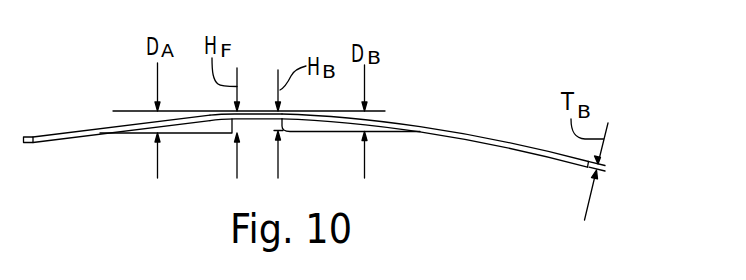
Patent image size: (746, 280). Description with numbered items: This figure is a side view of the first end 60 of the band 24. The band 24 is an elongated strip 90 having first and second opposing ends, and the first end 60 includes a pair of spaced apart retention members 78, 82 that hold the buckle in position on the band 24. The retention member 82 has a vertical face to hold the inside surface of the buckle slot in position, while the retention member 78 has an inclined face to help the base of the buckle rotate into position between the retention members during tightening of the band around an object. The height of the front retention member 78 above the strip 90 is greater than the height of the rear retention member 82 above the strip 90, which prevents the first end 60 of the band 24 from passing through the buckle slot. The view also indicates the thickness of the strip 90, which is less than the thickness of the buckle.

The band 24 is at (415, 90).
The first end 60 is at (32, 136).
The rear retention member 82 is at (222, 134).
The front retention member 78 is at (294, 133).
The strip 90 is at (468, 144).